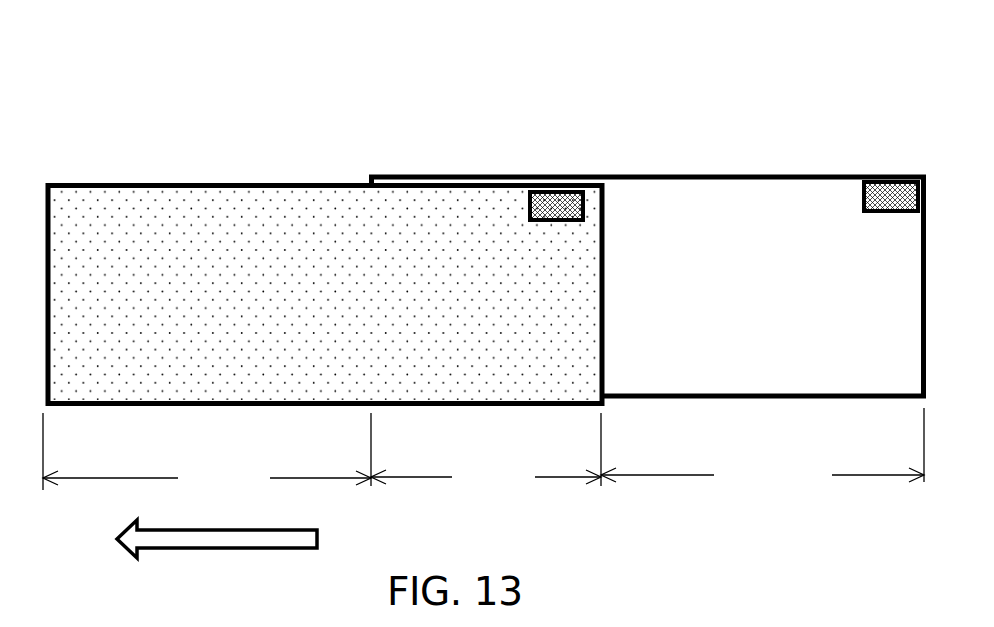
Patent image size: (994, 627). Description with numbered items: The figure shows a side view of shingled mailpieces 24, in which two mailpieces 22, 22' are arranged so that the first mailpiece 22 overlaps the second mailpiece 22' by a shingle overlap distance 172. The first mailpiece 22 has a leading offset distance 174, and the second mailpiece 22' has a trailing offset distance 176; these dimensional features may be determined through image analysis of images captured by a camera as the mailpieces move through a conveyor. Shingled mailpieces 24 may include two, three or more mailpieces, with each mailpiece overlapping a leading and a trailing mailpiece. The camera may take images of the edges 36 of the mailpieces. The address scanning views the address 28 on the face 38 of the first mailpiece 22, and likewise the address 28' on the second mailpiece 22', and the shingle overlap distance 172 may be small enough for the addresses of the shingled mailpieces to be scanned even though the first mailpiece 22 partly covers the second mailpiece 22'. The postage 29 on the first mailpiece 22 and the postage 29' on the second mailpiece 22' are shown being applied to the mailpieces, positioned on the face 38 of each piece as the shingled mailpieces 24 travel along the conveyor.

The first mailpiece 22 is at (325, 236).
The second mailpiece 22' is at (648, 232).
The shingled mailpieces 24 is at (213, 157).
The address 28 is at (358, 205).
The address 28' is at (705, 198).
The postage 29 is at (556, 152).
The postage 29' is at (891, 144).
The edges 36 is at (80, 186).
The face 38 is at (398, 213).
The shingle overlap distance 172 is at (486, 460).
The leading offset distance 174 is at (207, 460).
The trailing offset distance 176 is at (762, 455).